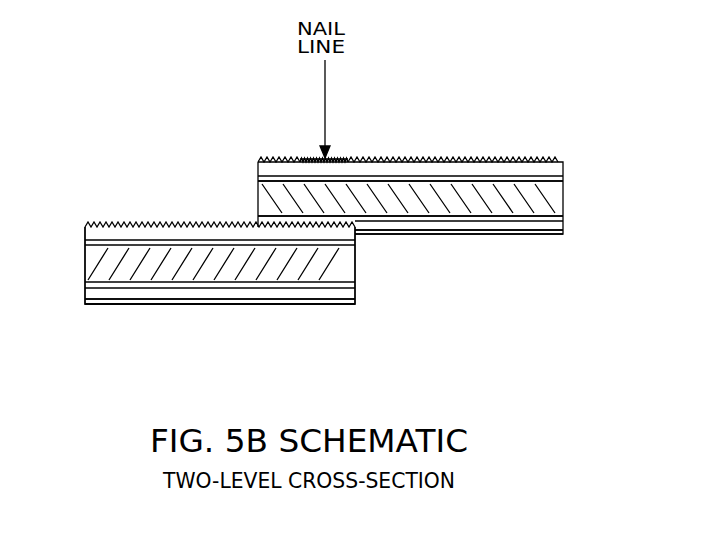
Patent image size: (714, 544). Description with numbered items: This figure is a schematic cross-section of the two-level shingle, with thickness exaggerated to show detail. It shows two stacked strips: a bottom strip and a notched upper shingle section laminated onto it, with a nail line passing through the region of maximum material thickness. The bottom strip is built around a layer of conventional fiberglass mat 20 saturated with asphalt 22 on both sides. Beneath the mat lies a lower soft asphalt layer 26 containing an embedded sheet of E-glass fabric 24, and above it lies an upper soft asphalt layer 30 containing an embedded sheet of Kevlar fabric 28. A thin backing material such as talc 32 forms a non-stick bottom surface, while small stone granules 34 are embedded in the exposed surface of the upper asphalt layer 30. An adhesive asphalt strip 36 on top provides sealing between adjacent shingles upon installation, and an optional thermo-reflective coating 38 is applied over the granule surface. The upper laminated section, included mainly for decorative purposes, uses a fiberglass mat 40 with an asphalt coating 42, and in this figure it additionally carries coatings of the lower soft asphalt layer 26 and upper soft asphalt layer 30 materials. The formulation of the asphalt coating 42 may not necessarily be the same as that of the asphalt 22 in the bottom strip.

The fiberglass mat 20 is at (343, 265).
The asphalt 22 is at (220, 265).
The E-glass fabric 24 is at (278, 287).
The lower soft asphalt layer 26 is at (483, 223).
The Kevlar fabric 28 is at (230, 243).
The upper soft asphalt layer 30 is at (533, 168).
The talc backing material 32 is at (552, 232).
The stone granules 34 is at (450, 162).
The adhesive asphalt strip 36 is at (332, 160).
The thermo-reflective coating 38 is at (285, 160).
The fiberglass mat of upper section 40 is at (385, 200).
The asphalt coating of upper section 42 is at (410, 198).